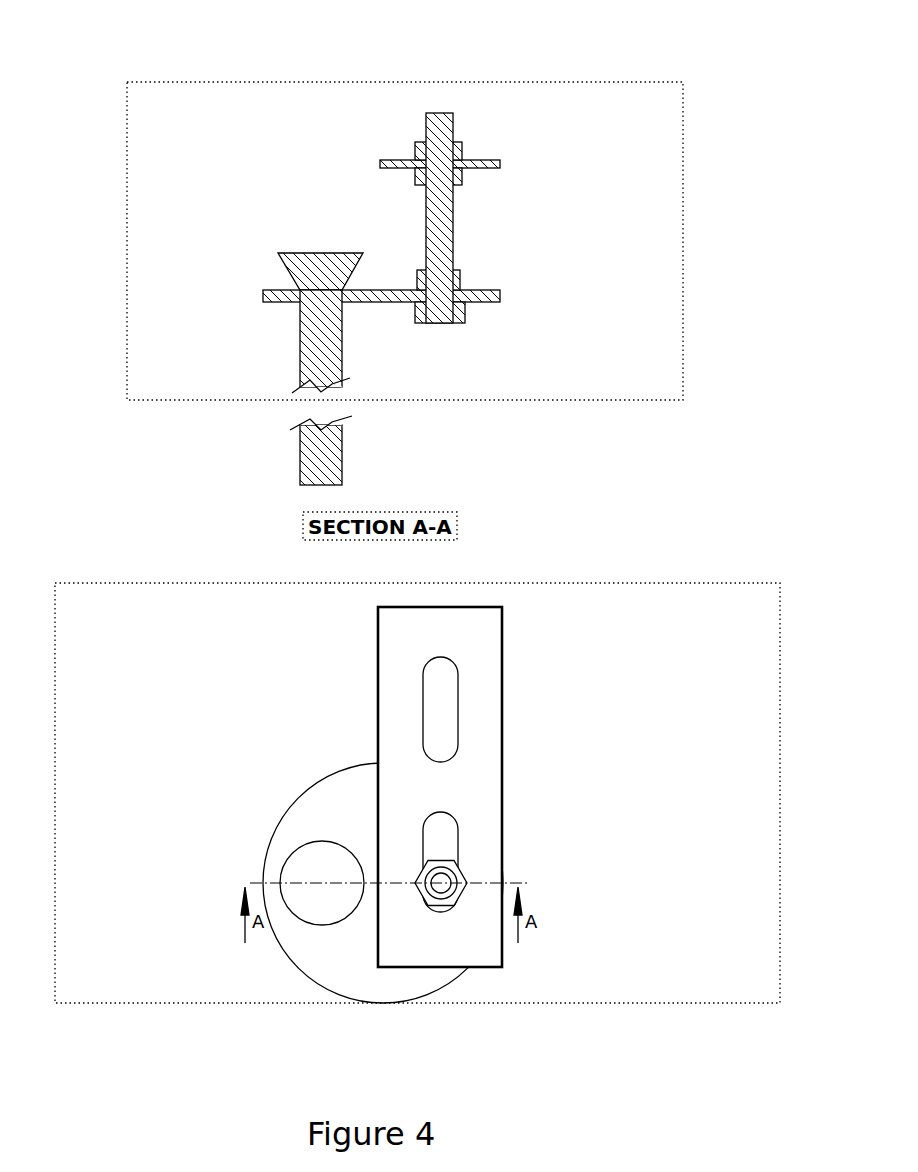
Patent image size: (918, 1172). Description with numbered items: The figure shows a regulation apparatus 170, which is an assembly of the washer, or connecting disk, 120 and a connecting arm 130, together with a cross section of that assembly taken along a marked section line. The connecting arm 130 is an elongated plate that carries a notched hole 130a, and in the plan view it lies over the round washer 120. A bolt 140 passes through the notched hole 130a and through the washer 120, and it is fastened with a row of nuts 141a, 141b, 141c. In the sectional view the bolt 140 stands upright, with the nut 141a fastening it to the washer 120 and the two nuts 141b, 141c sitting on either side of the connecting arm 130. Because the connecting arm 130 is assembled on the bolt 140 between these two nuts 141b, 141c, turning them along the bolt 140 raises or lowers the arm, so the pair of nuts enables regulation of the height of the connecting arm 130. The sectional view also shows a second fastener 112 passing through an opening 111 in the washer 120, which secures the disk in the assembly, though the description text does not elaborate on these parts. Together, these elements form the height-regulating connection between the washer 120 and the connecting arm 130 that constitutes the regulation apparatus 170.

The regulation apparatus 170 is at (247, 165).
The connecting arm 130 is at (387, 160).
The notched hole 130a is at (440, 725).
The nut 141c is at (470, 145).
The nut 141b is at (470, 177).
The bolt 140 is at (457, 225).
The nut 141a is at (470, 275).
The washer (connecting disk) 120 is at (270, 290).
The screw 112 is at (300, 342).
The hole 111 is at (305, 865).